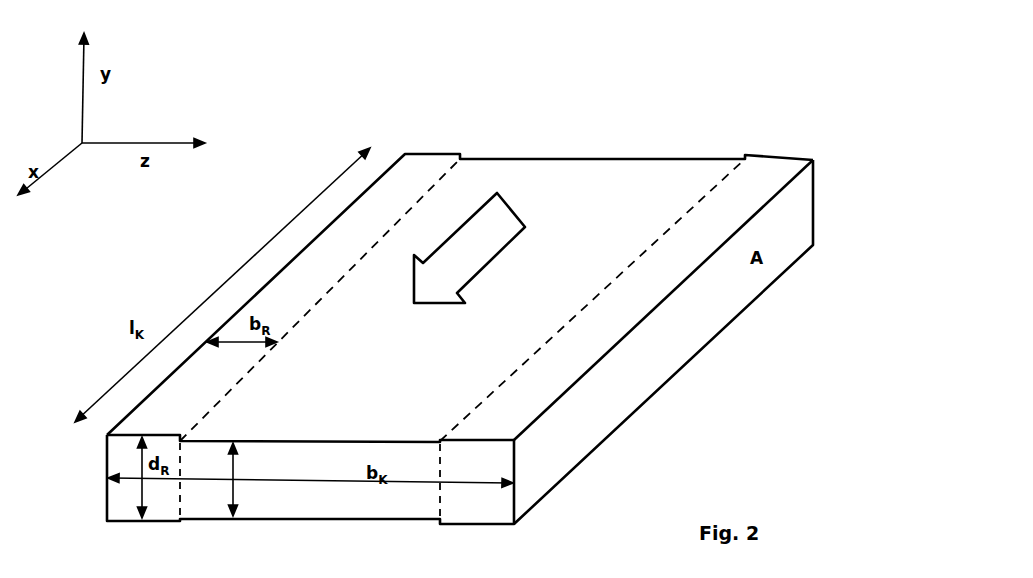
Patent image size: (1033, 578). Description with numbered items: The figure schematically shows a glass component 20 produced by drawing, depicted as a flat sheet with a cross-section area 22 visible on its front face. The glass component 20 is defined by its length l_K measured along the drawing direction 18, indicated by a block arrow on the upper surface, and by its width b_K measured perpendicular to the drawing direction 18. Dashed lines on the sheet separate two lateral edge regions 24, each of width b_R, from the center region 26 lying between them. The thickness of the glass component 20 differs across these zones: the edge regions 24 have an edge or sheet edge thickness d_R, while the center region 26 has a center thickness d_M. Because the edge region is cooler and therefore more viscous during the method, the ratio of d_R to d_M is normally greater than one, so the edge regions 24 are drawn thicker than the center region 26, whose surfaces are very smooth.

The drawing direction 18 is at (469, 248).
The glass component 20 is at (663, 368).
The cross-section area 22 is at (310, 479).
The edge regions 24 is at (462, 338).
The center region 26 is at (272, 443).